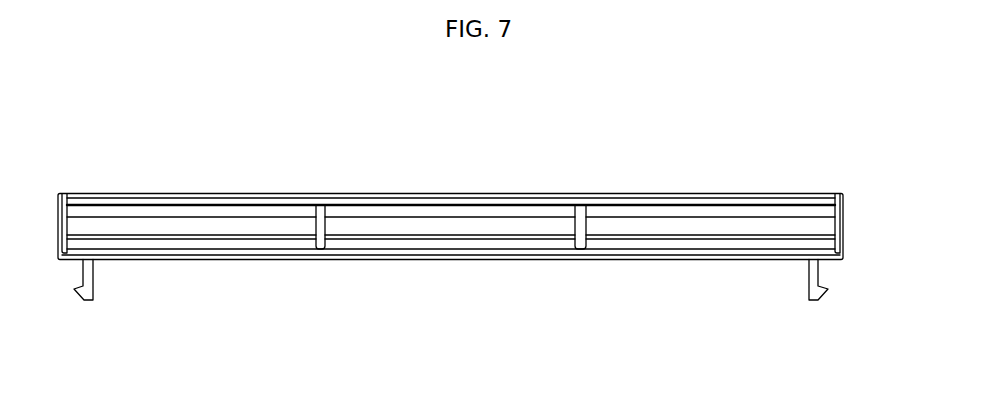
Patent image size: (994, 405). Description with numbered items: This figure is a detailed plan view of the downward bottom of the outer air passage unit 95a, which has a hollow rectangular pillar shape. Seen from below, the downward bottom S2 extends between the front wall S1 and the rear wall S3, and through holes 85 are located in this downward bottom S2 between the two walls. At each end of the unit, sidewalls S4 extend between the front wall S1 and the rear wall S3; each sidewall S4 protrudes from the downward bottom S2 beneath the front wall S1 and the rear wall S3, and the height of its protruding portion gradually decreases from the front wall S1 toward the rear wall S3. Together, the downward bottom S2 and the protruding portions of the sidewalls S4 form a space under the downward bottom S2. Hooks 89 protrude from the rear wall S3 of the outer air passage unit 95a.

The outer air passage unit 95a is at (125, 110).
The front wall S1 is at (192, 194).
The through holes 85 is at (437, 225).
The downward bottom S2 is at (717, 197).
The rear wall S3 is at (620, 262).
The sidewalls S4 is at (845, 222).
The hooks 89 is at (96, 288).